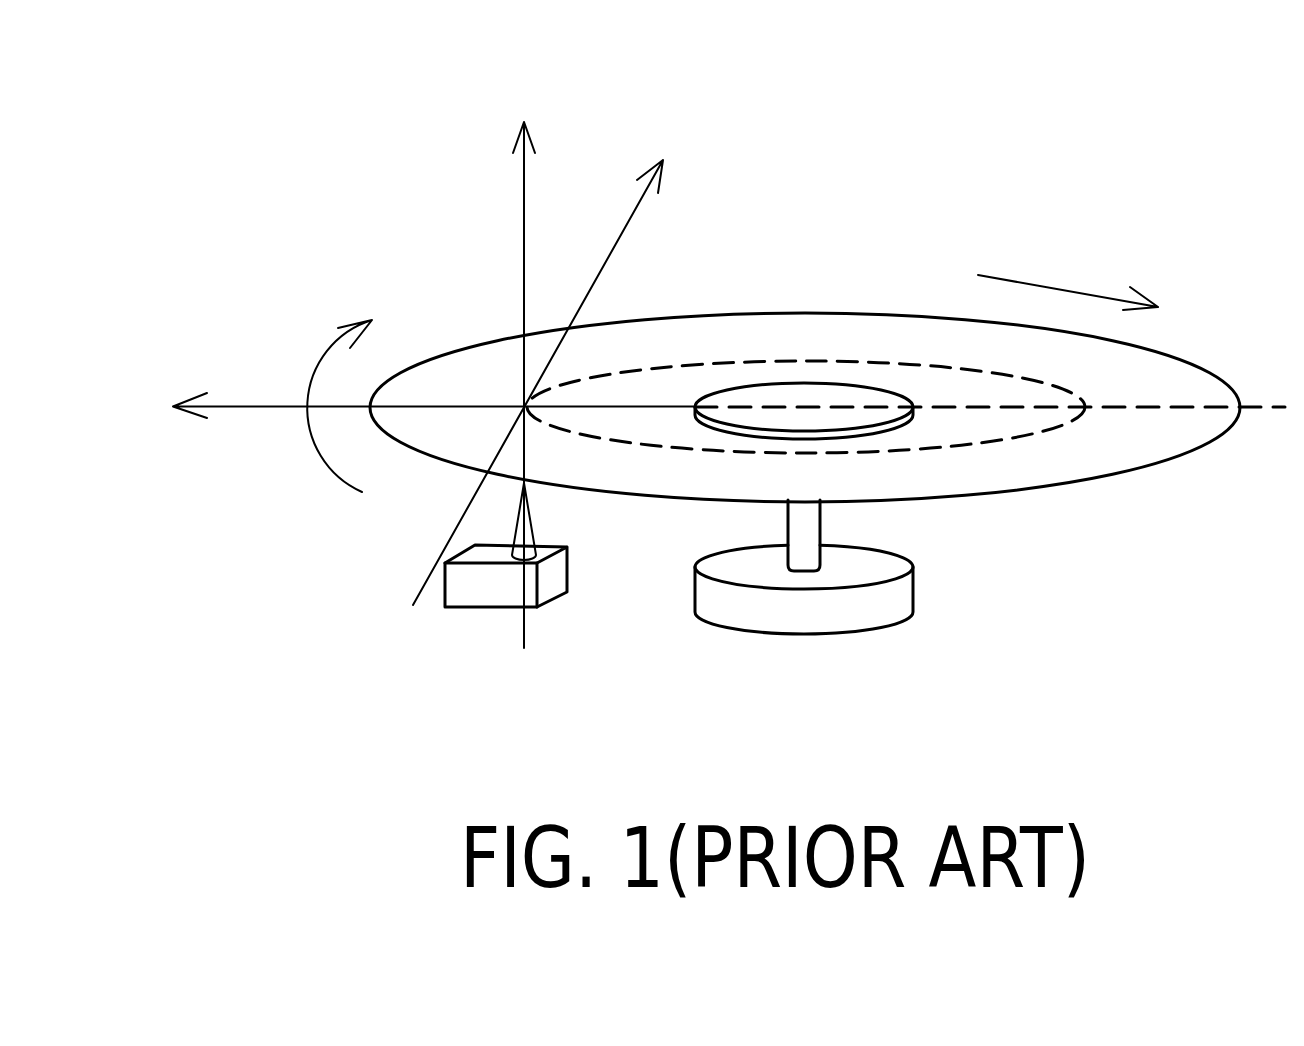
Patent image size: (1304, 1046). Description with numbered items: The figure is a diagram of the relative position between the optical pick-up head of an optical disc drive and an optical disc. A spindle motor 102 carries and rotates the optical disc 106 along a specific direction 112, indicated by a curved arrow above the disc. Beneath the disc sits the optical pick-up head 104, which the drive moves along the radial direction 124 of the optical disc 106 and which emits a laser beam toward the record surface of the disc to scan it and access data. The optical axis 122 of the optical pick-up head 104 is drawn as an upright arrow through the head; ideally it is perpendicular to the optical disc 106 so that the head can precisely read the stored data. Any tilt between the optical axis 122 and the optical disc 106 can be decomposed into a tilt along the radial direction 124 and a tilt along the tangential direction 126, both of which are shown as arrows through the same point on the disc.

The spindle motor 102 is at (867, 630).
The optical pick-up head 104 is at (553, 580).
The optical disc 106 is at (1083, 482).
The specific direction 112 is at (1062, 285).
The optical axis 122 is at (525, 358).
The radial direction 124 is at (724, 406).
The tangential direction 126 is at (556, 356).